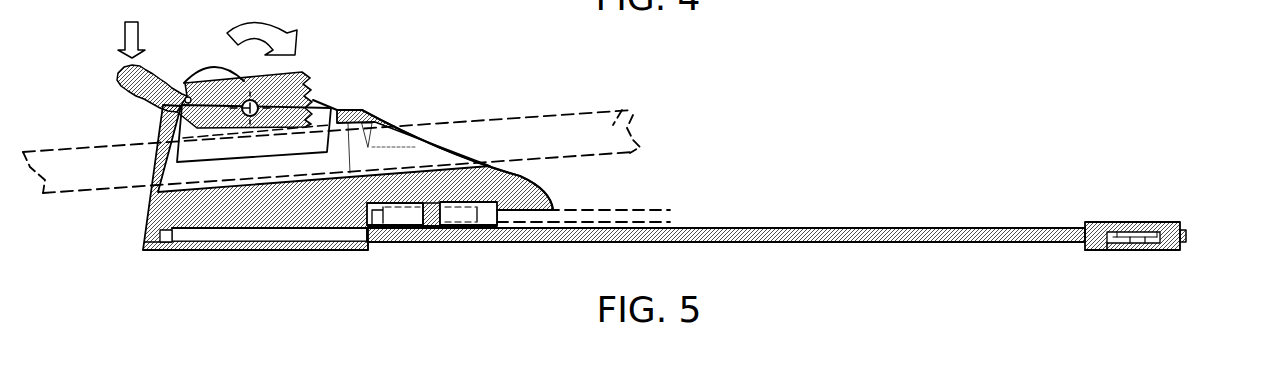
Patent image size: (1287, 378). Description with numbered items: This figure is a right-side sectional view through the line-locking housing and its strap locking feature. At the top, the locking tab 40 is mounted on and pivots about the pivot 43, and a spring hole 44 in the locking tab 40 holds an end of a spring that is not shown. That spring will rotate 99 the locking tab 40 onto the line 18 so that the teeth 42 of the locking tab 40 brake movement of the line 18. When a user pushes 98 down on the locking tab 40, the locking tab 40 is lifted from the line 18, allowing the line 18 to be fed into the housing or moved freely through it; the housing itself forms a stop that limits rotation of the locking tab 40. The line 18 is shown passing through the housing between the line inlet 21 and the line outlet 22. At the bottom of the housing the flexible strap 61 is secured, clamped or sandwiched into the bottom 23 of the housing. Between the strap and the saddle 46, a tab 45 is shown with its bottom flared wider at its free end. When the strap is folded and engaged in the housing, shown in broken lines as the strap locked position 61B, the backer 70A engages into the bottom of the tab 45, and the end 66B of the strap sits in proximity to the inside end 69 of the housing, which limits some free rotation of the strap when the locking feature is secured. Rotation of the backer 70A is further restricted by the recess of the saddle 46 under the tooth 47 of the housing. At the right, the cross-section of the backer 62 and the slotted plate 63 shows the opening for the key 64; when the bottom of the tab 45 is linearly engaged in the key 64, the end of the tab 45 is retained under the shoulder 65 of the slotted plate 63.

The line 18 is at (495, 117).
The line inlet 21 is at (155, 163).
The line outlet 22 is at (402, 128).
The bottom of the housing 23 is at (273, 253).
The locking tab 40 is at (118, 72).
The teeth 42 is at (318, 82).
The pivot 43 is at (247, 105).
The spring hole 44 is at (187, 97).
The tab 45 is at (432, 222).
The saddle 46 is at (487, 200).
The tooth 47 is at (523, 210).
The flexible strap 61 is at (877, 243).
The strap locked position 61B is at (640, 212).
The backer 62 is at (1155, 222).
The slotted plate 63 is at (1095, 250).
The key 64 is at (1118, 248).
The shoulder 65 is at (1145, 248).
The end of the flexible strap 66B is at (377, 222).
The end of the housing 69 is at (363, 225).
The backer 70A is at (478, 220).
The push 98 is at (123, 33).
The rotate 99 is at (280, 18).